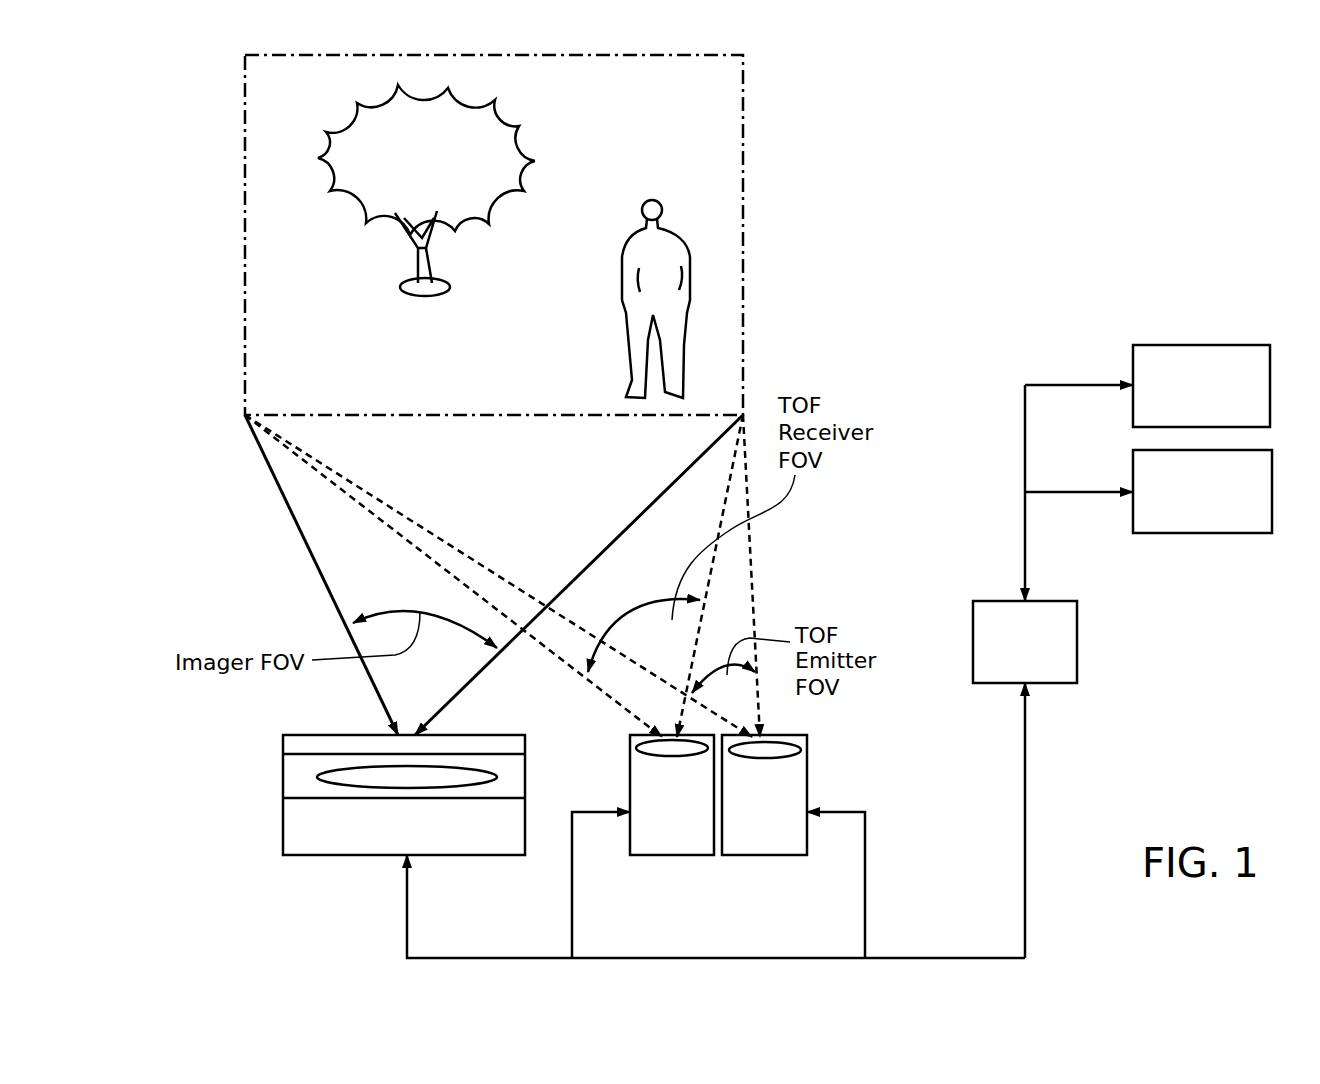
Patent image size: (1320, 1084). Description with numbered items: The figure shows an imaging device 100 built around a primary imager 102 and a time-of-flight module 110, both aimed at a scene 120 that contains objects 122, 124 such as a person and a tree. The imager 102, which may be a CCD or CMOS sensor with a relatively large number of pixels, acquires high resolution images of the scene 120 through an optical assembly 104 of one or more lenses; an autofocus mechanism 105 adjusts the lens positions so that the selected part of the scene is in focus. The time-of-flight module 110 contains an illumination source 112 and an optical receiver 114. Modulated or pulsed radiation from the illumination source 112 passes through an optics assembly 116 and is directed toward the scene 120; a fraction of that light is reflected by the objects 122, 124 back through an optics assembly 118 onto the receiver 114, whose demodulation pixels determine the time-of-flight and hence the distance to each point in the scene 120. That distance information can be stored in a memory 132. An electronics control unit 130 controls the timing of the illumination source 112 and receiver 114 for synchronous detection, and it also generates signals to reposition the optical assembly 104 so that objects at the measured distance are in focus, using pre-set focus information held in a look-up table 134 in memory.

The imaging device 100 is at (326, 807).
The primary imager 102 is at (362, 848).
The optical assembly 104 is at (366, 746).
The autofocus mechanism 105 is at (292, 780).
The time-of-flight module 110 is at (734, 828).
The illumination source 112 is at (780, 845).
The optical receiver 114 is at (650, 845).
The optics assembly 116 is at (808, 750).
The optics assembly 118 is at (632, 750).
The scene 120 is at (744, 100).
The object 122 is at (676, 238).
The object 124 is at (315, 137).
The electronics control unit 130 is at (972, 619).
The memory 132 is at (1175, 532).
The look-up table 134 is at (1163, 345).